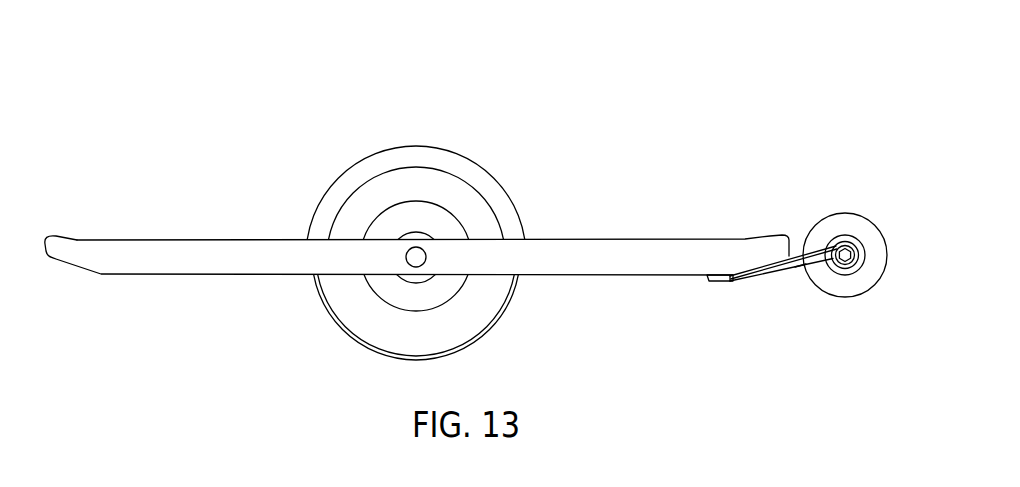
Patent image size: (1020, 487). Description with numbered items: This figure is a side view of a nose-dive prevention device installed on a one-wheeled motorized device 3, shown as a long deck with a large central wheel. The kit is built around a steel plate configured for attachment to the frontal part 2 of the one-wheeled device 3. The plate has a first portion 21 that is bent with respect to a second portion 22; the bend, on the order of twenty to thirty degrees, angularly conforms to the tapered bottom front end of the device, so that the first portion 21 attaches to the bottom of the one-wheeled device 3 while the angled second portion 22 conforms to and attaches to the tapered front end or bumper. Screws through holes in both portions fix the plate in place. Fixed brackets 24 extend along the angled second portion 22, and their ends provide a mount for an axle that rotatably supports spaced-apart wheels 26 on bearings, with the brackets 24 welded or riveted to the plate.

The one-wheeled motorized device 3 is at (532, 92).
The frontal part 2 is at (752, 239).
The first portion 21 is at (713, 277).
The second portion 22 is at (763, 277).
The fixed brackets 24 is at (800, 272).
The wheels 26 is at (858, 225).